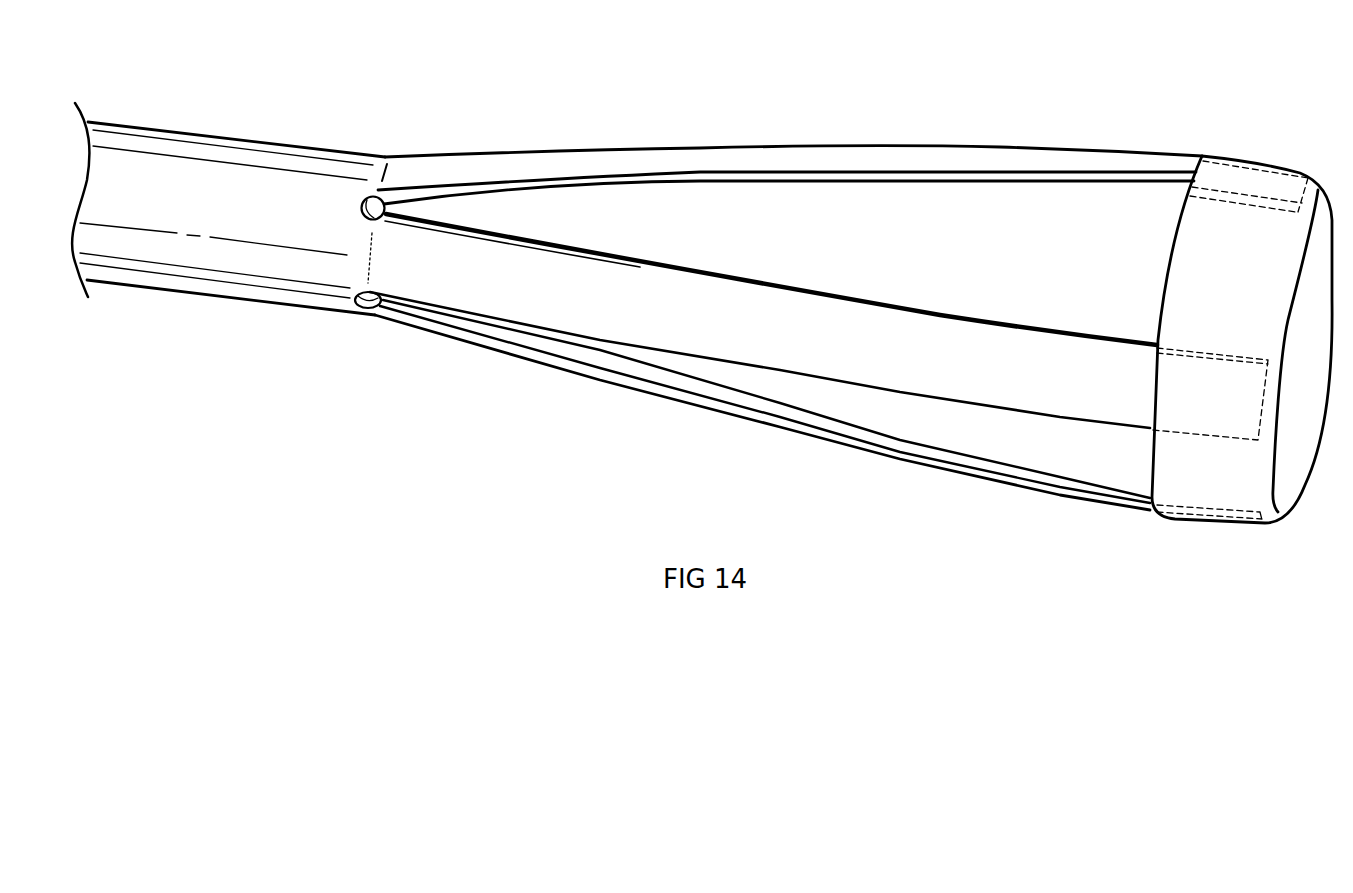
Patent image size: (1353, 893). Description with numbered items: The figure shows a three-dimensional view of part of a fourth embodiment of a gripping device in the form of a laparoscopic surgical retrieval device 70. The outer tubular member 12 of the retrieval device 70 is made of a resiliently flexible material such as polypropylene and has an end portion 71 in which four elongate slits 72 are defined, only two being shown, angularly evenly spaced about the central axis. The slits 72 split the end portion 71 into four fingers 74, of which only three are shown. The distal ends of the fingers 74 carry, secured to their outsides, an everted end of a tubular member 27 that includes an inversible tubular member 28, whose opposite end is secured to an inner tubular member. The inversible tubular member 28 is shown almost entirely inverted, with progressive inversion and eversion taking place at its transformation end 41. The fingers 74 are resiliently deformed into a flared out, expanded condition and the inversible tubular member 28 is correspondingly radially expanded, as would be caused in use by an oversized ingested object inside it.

The outer tubular member 12 is at (256, 142).
The laparoscopic surgical retrieval device 70 is at (445, 112).
The inversible tubular member 28 is at (990, 215).
The elongate slits 72 is at (850, 392).
The fingers 74 is at (780, 430).
The end portion 71 is at (676, 403).
The transformation end 41 is at (1303, 477).
The tubular member 27 is at (1257, 158).